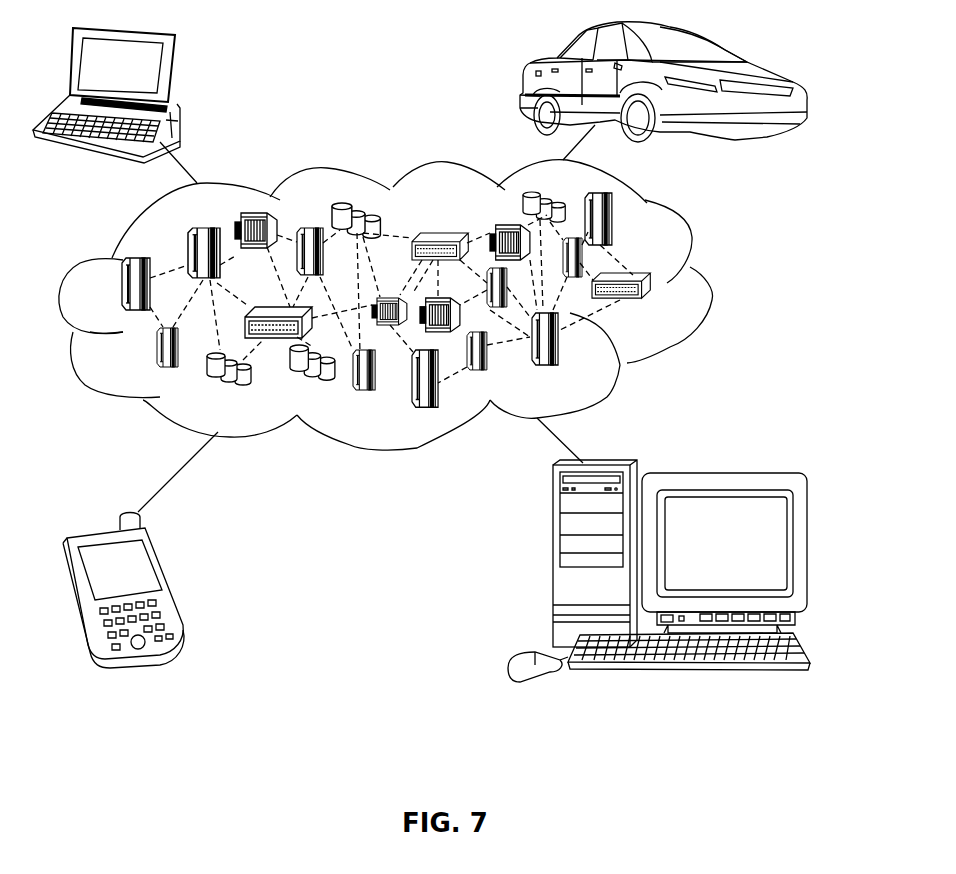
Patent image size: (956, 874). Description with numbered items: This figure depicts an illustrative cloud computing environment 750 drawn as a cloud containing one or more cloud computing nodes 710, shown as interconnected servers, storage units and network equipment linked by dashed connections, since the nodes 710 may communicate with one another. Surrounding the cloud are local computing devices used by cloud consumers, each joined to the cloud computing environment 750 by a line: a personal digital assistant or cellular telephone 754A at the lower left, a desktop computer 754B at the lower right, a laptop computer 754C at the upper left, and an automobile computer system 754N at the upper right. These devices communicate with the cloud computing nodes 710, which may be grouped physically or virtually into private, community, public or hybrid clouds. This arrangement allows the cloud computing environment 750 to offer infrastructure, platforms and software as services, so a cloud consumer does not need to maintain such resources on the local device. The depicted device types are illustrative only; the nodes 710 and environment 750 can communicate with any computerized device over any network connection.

The cloud computing nodes 710 is at (680, 308).
The cloud computing environment 750 is at (690, 250).
The personal digital assistant (PDA) or cellular telephone 754A is at (172, 583).
The desktop computer 754B is at (570, 565).
The laptop computer 754C is at (177, 72).
The automobile computer system 754N is at (528, 75).